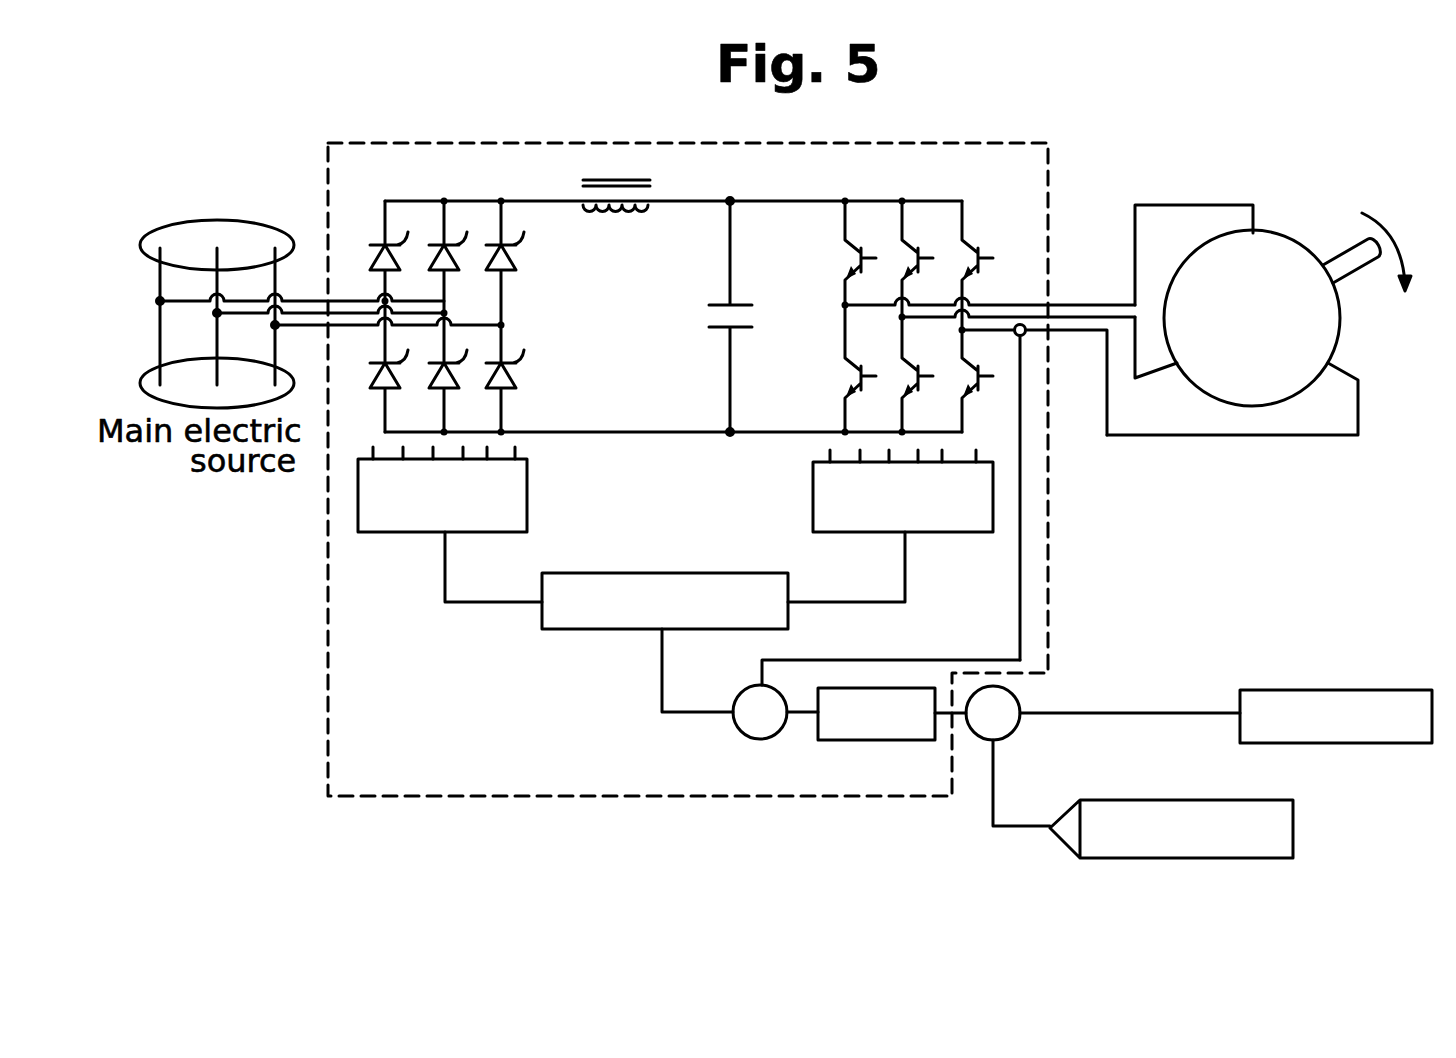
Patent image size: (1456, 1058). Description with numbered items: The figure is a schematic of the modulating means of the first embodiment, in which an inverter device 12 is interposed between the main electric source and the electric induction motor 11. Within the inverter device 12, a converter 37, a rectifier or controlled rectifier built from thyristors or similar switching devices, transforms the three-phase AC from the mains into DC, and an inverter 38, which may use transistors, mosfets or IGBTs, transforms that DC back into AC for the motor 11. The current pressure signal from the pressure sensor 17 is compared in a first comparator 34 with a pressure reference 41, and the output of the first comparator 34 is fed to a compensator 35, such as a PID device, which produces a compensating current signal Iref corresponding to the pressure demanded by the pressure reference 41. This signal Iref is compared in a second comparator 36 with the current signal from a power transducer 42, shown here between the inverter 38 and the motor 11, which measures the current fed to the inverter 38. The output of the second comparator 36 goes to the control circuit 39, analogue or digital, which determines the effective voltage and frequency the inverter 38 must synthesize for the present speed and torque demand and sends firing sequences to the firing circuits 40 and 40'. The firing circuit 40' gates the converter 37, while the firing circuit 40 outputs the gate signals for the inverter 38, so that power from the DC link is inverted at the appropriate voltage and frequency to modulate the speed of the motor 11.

The electric induction motor 11 is at (1288, 218).
The inverter device 12 is at (577, 796).
The pressure sensor 17 is at (1336, 718).
The first comparator 34 is at (1017, 697).
The compensator 35 is at (875, 736).
The second comparator 36 is at (738, 728).
The converter 37 is at (472, 197).
The inverter 38 is at (940, 195).
The control circuit 39 is at (580, 629).
The firing circuit 40 is at (894, 532).
The firing circuit 40' is at (494, 530).
The pressure reference 41 is at (1293, 833).
The power transducer 42 is at (1025, 336).